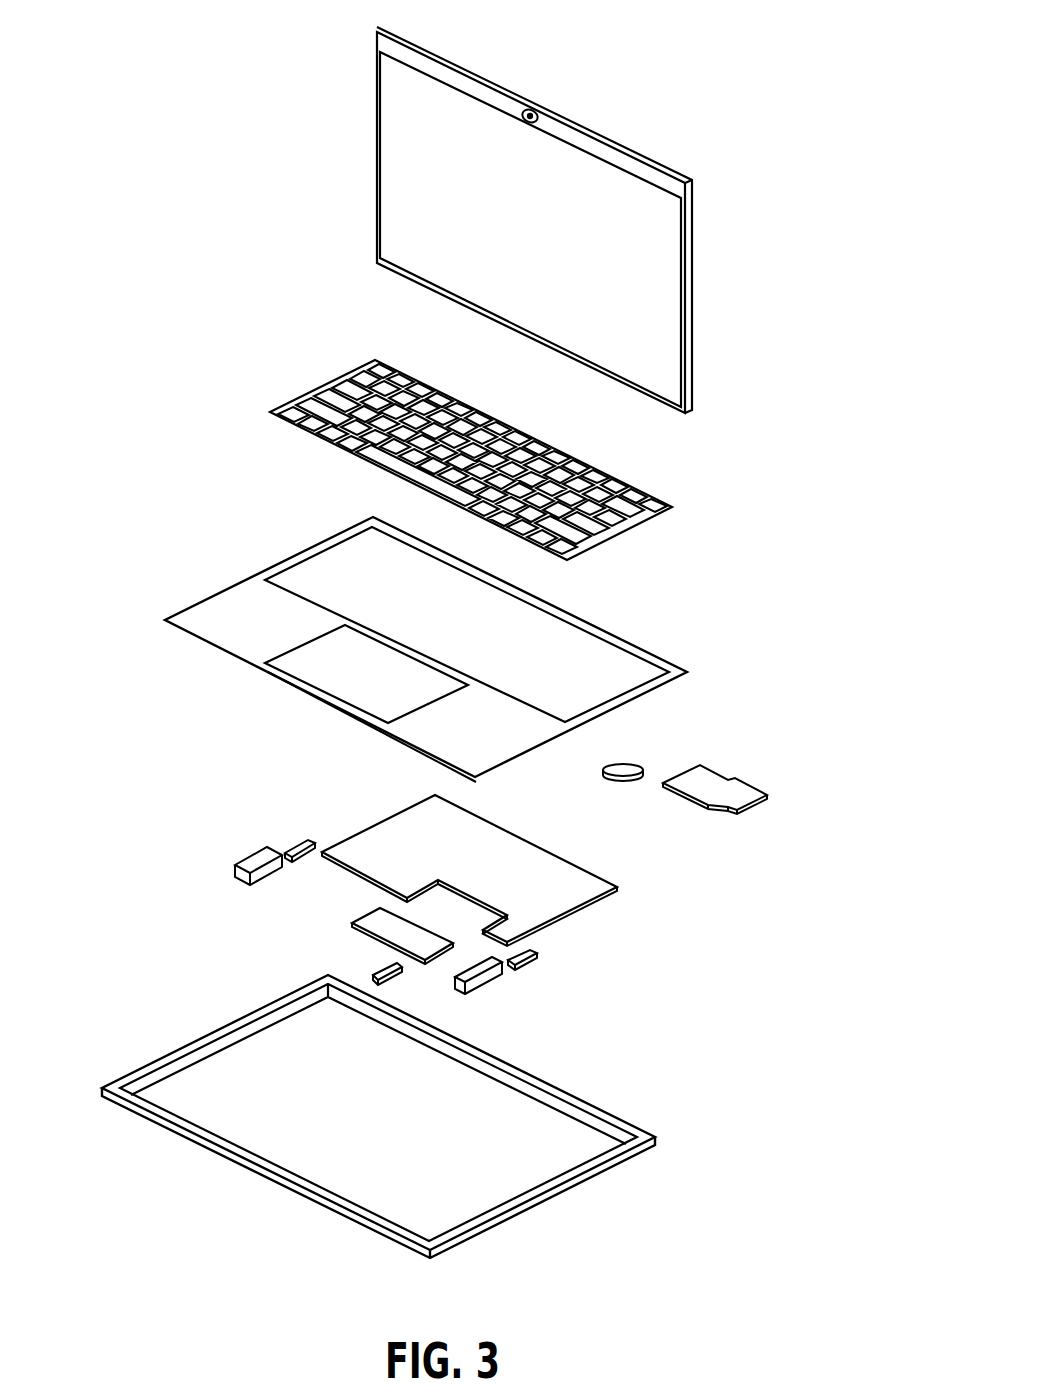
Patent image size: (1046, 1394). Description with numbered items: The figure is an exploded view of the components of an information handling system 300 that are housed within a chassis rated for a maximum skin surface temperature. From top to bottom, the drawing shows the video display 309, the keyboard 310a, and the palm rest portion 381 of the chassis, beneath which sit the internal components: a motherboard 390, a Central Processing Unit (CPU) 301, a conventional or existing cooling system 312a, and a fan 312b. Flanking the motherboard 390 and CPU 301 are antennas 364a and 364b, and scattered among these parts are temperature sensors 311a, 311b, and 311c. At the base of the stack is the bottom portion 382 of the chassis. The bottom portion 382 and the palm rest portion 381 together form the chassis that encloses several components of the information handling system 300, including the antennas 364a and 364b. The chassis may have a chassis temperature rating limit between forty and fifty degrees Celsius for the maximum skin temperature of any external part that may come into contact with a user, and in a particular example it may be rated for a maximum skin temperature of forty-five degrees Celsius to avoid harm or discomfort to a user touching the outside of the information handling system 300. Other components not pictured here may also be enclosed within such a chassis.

The information handling system 300 is at (120, 90).
The video display 309 is at (698, 298).
The keyboard 310a is at (647, 527).
The palm rest portion 381 is at (640, 632).
The fan 312b is at (642, 757).
The cooling system 312a is at (746, 775).
The motherboard 390 is at (585, 862).
The Central Processing Unit (CPU) 301 is at (346, 916).
The antenna 364a is at (228, 866).
The antenna 364b is at (490, 992).
The temperature sensor 311a is at (285, 835).
The temperature sensor 311b is at (545, 957).
The temperature sensor 311c is at (362, 969).
The bottom portion 382 is at (588, 1085).